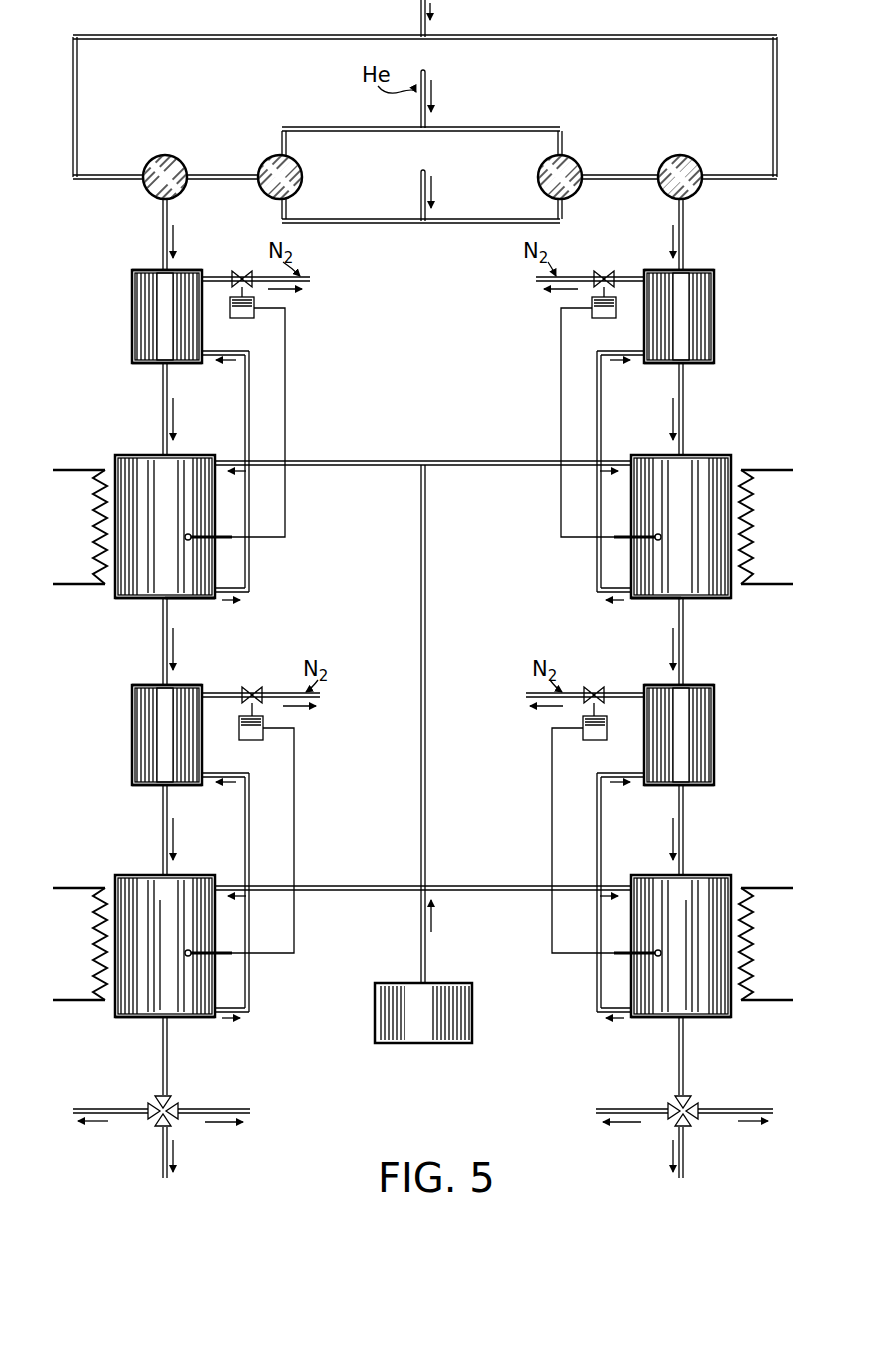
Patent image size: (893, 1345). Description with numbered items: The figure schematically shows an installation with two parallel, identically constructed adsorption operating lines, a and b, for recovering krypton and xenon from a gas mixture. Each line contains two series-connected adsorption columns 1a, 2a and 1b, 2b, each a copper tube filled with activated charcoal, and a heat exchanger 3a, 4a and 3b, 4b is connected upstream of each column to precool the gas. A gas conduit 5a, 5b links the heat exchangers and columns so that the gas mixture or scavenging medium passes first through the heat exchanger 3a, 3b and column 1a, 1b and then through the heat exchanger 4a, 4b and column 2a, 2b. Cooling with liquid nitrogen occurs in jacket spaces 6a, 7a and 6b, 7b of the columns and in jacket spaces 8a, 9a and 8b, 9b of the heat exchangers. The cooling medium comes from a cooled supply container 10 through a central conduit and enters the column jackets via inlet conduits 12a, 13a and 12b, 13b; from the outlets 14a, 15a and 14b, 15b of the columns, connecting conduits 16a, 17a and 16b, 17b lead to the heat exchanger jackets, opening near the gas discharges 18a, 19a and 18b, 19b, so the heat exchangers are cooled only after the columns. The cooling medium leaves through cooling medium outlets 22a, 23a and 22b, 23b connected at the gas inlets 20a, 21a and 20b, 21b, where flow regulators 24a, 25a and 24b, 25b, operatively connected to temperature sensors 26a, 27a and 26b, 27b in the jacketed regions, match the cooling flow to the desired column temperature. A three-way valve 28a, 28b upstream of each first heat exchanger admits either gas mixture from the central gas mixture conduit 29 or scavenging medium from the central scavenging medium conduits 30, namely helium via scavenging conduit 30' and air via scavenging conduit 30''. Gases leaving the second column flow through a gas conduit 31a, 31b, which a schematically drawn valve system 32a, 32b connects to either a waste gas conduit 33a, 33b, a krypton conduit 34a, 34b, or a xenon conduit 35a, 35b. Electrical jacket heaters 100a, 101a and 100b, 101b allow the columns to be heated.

The adsorption column 1a is at (155, 484).
The adsorption column 1b is at (708, 478).
The adsorption column 2a is at (176, 1000).
The adsorption column 2b is at (670, 1000).
The heat exchanger 3a is at (170, 335).
The heat exchanger 3b is at (672, 342).
The heat exchanger 4a is at (158, 744).
The heat exchanger 4b is at (690, 744).
The gas conduit 5a is at (163, 218).
The gas conduit 5b is at (683, 230).
The jacket space 6a is at (124, 582).
The jacket space 6b is at (722, 582).
The jacket space 7a is at (125, 882).
The jacket space 7b is at (722, 882).
The jacket space 8a is at (138, 330).
The jacket space 8b is at (708, 300).
The jacket space 9a is at (136, 716).
The jacket space 9b is at (712, 716).
The cooled supply container 10 is at (410, 1003).
The inlet conduit 12a is at (318, 462).
The inlet conduit 12b is at (528, 462).
The inlet conduit 13a is at (325, 886).
The inlet conduit 13b is at (524, 886).
The outlet 14a is at (185, 600).
The outlet 14b is at (660, 600).
The outlet 15a is at (146, 1018).
The outlet 15b is at (702, 1018).
The connecting conduit 16a is at (250, 398).
The connecting conduit 16b is at (598, 412).
The connecting conduit 17a is at (249, 813).
The connecting conduit 17b is at (597, 813).
The gas discharge 18a is at (150, 366).
The gas discharge 18b is at (690, 365).
The gas discharge 19a is at (150, 788).
The gas discharge 19b is at (700, 788).
The gas inlet 20a is at (180, 268).
The gas inlet 20b is at (662, 268).
The gas inlet 21a is at (160, 688).
The gas inlet 21b is at (695, 690).
The cooling medium outlet 22a is at (310, 281).
The cooling medium outlet 22b is at (536, 281).
The cooling medium outlet 23a is at (320, 697).
The cooling medium outlet 23b is at (526, 697).
The flow regulator 24a is at (252, 314).
The flow regulator 24b is at (594, 314).
The flow regulator 25a is at (260, 736).
The flow regulator 25b is at (586, 736).
The temperature sensor 26a is at (232, 540).
The temperature sensor 26b is at (614, 540).
The temperature sensor 27a is at (232, 955).
The temperature sensor 27b is at (614, 955).
The three-way valve 28a is at (160, 158).
The three-way valve 28b is at (668, 162).
The central gas mixture conduit 29 is at (76, 124).
The central scavenging medium conduits 30 is at (413, 156).
The scavenging conduit 30' is at (422, 150).
The scavenging conduit 30'' is at (421, 196).
The gas conduit 31a is at (163, 1064).
The gas conduit 31b is at (683, 1064).
The valve system 32a is at (170, 1103).
The valve system 32b is at (676, 1103).
The waste gas conduit 33a is at (116, 1113).
The waste gas conduit 33b is at (773, 1112).
The krypton conduit 34a is at (160, 1150).
The krypton conduit 34b is at (684, 1155).
The xenon conduit 35a is at (250, 1112).
The xenon conduit 35b is at (626, 1113).
The electrical jacket heater 100a is at (95, 504).
The electrical jacket heater 100b is at (751, 542).
The electrical jacket heater 101a is at (95, 942).
The electrical jacket heater 101b is at (751, 942).